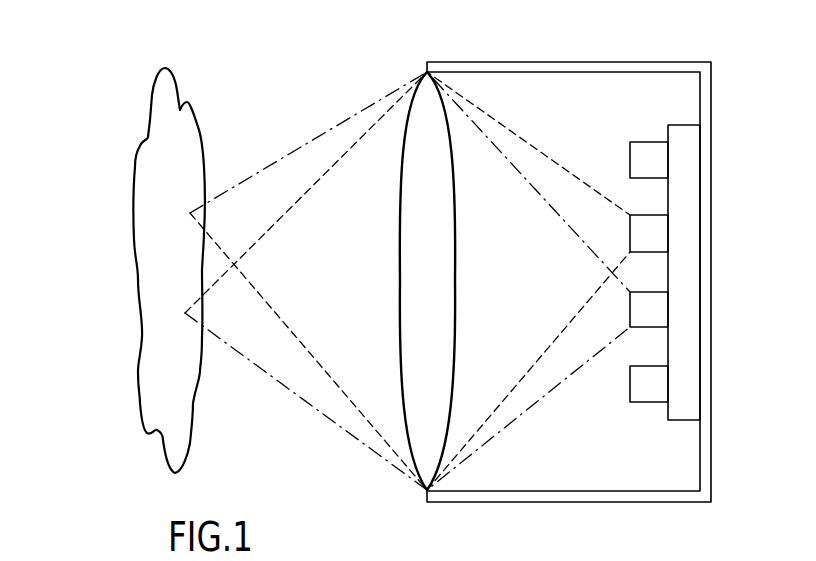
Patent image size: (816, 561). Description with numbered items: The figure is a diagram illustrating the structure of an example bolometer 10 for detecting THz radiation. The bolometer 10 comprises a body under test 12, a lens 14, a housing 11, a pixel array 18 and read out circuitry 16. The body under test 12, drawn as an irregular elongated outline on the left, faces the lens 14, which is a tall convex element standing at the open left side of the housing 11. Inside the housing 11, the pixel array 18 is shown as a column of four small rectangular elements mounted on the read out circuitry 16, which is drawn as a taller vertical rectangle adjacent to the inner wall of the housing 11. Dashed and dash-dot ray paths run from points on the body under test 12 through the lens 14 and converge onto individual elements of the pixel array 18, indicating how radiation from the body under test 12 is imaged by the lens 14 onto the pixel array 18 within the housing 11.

The bolometer 10 is at (100, 423).
The housing 11 is at (580, 53).
The body under test 12 is at (155, 126).
The lens 14 is at (418, 148).
The read out circuitry 16 is at (687, 185).
The pixel array 18 is at (630, 160).